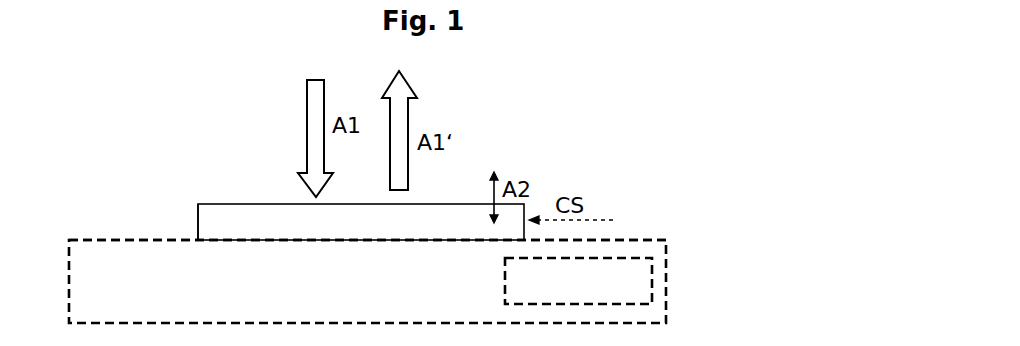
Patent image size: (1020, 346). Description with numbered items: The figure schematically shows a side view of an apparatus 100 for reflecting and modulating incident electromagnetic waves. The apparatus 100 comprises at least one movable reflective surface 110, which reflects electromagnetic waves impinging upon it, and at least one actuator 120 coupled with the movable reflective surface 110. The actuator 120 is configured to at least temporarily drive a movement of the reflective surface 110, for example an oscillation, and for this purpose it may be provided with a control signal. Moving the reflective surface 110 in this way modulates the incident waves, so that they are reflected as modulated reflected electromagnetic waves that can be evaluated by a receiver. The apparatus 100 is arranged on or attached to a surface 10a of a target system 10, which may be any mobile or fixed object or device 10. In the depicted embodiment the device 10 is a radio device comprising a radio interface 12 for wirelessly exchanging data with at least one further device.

The apparatus 100 is at (303, 170).
The movable reflective surface 110 is at (257, 198).
The actuator 120 is at (198, 212).
The target system 10 is at (667, 250).
The surface 10a is at (102, 238).
The radio interface 12 is at (652, 287).